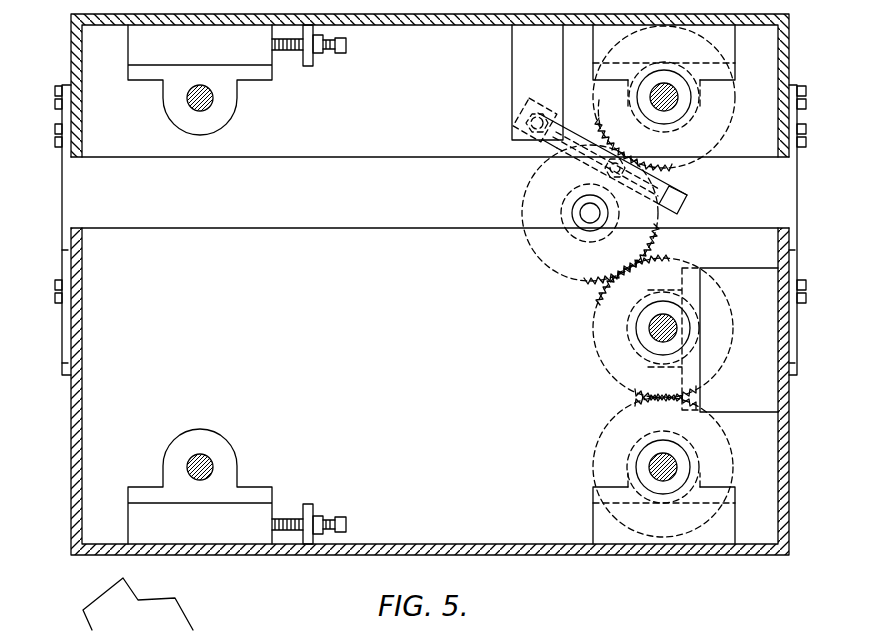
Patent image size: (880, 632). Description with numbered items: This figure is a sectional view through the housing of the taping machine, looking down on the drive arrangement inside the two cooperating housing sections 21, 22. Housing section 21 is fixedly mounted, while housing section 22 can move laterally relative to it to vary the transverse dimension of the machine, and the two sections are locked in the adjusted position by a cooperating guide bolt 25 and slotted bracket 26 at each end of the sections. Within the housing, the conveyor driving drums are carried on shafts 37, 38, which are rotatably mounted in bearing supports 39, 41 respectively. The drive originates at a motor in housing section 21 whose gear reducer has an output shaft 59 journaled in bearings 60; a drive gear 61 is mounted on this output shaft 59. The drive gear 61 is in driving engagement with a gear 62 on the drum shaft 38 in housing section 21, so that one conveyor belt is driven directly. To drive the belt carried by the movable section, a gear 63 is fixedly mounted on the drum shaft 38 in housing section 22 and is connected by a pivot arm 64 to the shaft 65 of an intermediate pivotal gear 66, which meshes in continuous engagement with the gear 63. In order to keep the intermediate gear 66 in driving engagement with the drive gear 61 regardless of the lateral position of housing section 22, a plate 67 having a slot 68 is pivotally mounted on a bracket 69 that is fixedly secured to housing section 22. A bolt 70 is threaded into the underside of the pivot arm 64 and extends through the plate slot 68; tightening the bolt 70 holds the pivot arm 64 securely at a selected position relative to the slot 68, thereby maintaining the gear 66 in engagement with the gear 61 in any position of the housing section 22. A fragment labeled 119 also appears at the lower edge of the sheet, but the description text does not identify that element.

The housing section 21 is at (333, 242).
The housing section 22 is at (422, 140).
The guide bolt 25 is at (55, 284).
The slotted bracket 26 is at (66, 352).
The shaft 37 is at (215, 98).
The drum shaft 38 is at (664, 84).
The bearing support 39 is at (265, 59).
The bearing support 41 is at (729, 43).
The output shaft 59 is at (660, 342).
The bearings 60 is at (756, 402).
The drive gear 61 is at (600, 337).
The gear 62 is at (608, 446).
The gear 63 is at (706, 141).
The pivot arm 64 is at (627, 128).
The shaft 65 is at (580, 215).
The intermediate pivotal gear 66 is at (553, 250).
The plate 67 is at (673, 205).
The slot 68 is at (683, 190).
The bracket 69 is at (519, 48).
The bolt 70 is at (625, 191).
The fragment 119 is at (158, 598).